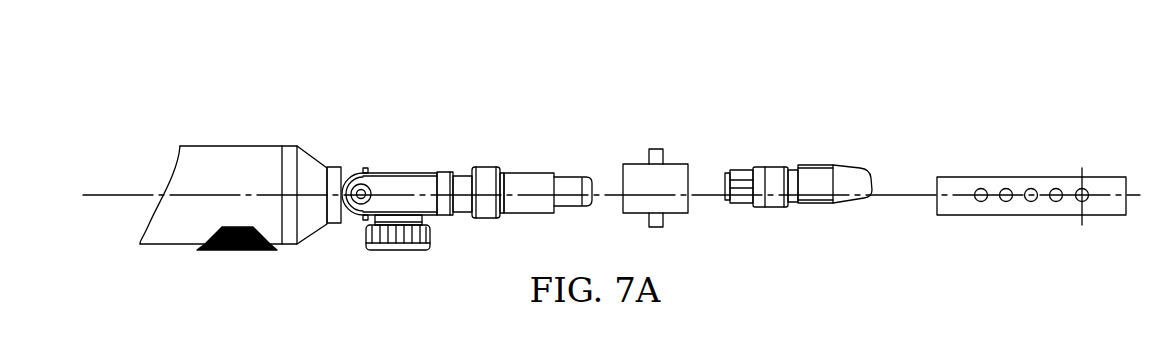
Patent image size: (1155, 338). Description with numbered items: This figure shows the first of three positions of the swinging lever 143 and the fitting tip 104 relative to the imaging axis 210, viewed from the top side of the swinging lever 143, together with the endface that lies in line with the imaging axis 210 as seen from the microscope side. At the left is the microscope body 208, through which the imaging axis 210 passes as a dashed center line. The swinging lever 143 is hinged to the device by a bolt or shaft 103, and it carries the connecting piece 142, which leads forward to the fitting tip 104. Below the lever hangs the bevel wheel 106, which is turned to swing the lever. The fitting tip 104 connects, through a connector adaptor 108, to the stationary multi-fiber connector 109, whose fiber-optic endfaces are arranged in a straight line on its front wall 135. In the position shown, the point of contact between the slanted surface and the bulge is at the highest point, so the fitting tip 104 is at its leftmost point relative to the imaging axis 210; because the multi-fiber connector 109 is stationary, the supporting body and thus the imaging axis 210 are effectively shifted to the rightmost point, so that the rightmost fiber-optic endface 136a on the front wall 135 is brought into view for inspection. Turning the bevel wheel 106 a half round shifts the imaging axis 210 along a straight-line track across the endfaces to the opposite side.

The imaging axis 210 is at (102, 195).
The microscope body 208 is at (223, 168).
The bolt or shaft 103 is at (362, 177).
The swinging lever 143 is at (412, 177).
The connecting piece 142 is at (447, 177).
The fitting tip 104 is at (532, 168).
The connector adaptor 108 is at (640, 176).
The multi-fiber connector 109 is at (772, 183).
The front wall 135 is at (990, 181).
The rightmost fiber-optic endface 136a is at (1078, 188).
The bevel wheel 106 is at (408, 248).